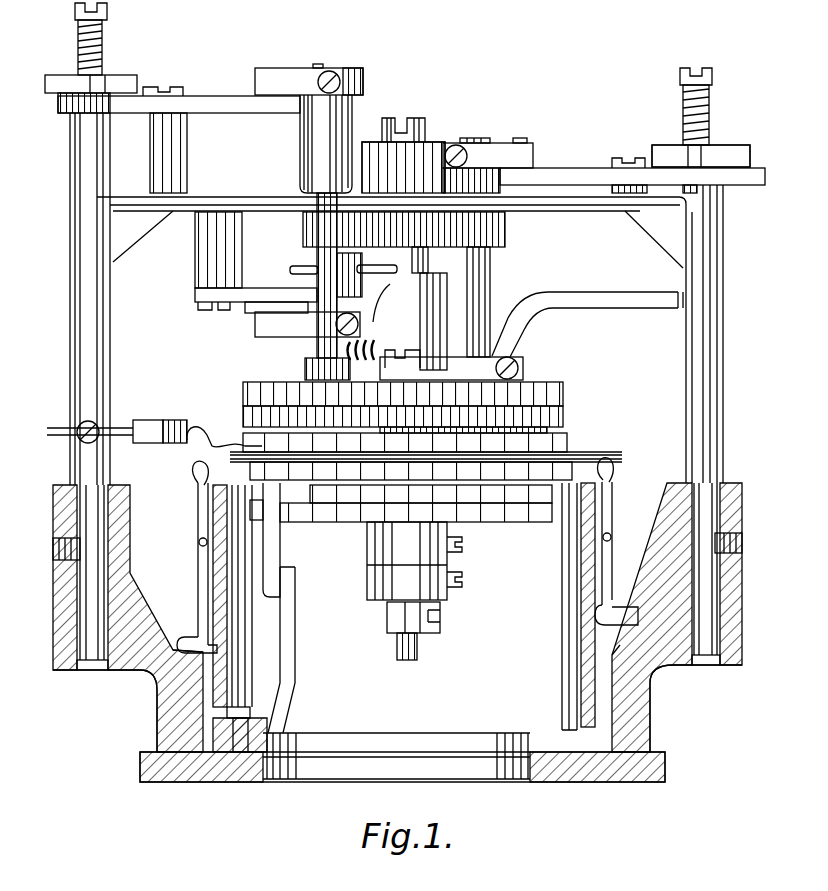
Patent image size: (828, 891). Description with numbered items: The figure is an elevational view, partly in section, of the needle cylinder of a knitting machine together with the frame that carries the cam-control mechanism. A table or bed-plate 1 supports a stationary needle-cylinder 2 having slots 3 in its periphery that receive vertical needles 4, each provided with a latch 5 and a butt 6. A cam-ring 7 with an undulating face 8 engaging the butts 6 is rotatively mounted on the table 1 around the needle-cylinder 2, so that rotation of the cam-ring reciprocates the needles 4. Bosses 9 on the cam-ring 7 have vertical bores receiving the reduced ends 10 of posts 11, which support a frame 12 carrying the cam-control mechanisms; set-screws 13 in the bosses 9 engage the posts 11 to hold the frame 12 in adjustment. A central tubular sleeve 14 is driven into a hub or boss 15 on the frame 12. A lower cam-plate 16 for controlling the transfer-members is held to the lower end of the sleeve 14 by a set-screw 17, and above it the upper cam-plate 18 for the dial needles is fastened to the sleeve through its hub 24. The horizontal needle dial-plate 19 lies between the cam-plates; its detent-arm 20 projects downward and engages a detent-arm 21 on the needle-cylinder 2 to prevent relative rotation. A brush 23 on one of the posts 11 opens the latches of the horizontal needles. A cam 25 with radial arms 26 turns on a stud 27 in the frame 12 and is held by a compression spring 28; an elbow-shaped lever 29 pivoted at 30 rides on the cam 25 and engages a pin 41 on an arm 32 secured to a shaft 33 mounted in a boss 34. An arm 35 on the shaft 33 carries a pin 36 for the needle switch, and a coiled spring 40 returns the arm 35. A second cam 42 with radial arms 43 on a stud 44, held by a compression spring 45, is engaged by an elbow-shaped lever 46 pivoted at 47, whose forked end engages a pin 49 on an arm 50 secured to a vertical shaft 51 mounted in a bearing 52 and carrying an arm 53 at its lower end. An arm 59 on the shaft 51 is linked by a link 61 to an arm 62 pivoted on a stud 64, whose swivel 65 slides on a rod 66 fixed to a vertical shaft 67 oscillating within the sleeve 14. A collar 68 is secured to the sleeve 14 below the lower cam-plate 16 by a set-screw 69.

The table or bed-plate 1 is at (546, 782).
The needle-cylinder 2 is at (588, 688).
The slots 3 is at (222, 692).
The vertical needles 4 is at (206, 572).
The latch 5 is at (196, 490).
The butt 6 is at (196, 626).
The cam-ring 7 is at (160, 701).
The undulating face 8 is at (180, 645).
The bosses 9 is at (122, 521).
The reduced ends 10 is at (108, 573).
The posts 11 is at (110, 376).
The frame 12 is at (238, 206).
The set-screws 13 is at (53, 546).
The tubular bearing or sleeve 14 is at (430, 262).
The hub or boss 15 is at (370, 142).
The cam-plate 16 is at (462, 552).
The set-screw 17 is at (462, 545).
The upper cam-plate 18 is at (560, 382).
The needle dial-plate 19 is at (570, 440).
The detent-arm 20 is at (280, 548).
The detent-arm 21 is at (295, 640).
The brush 23 is at (170, 443).
The hub 24 is at (440, 303).
The cam 25 is at (735, 160).
The radial arms 26 is at (668, 155).
The stud 27 is at (712, 84).
The compression spring 28 is at (709, 100).
The elbow-shaped lever 29 is at (632, 180).
The pivot 30 is at (626, 160).
The arm 32 is at (488, 168).
The shaft 33 is at (482, 140).
The boss 34 is at (505, 229).
The arm 35 is at (451, 368).
The pin or stud 36 is at (399, 360).
The coiled spring 40 is at (372, 350).
The pin 41 is at (521, 140).
The cam 42 is at (58, 106).
The radial arms 43 is at (102, 82).
The stud 44 is at (104, 19).
The compression spring 45 is at (102, 50).
The elbow-shaped lever 46 is at (179, 144).
The pivot 47 is at (176, 93).
The pin 49 is at (280, 68).
The arm 50 is at (309, 81).
The vertical shaft 51 is at (336, 70).
The bearing 52 is at (318, 125).
The arm 53 is at (305, 368).
The arm 59 is at (307, 324).
The link 61 is at (253, 313).
The arm 62 is at (262, 292).
The stud 64 is at (216, 310).
The swivel 65 is at (363, 287).
The rod or arm 66 is at (318, 268).
The vertical shaft 67 is at (388, 268).
The collar 68 is at (387, 583).
The set-screw 69 is at (462, 579).